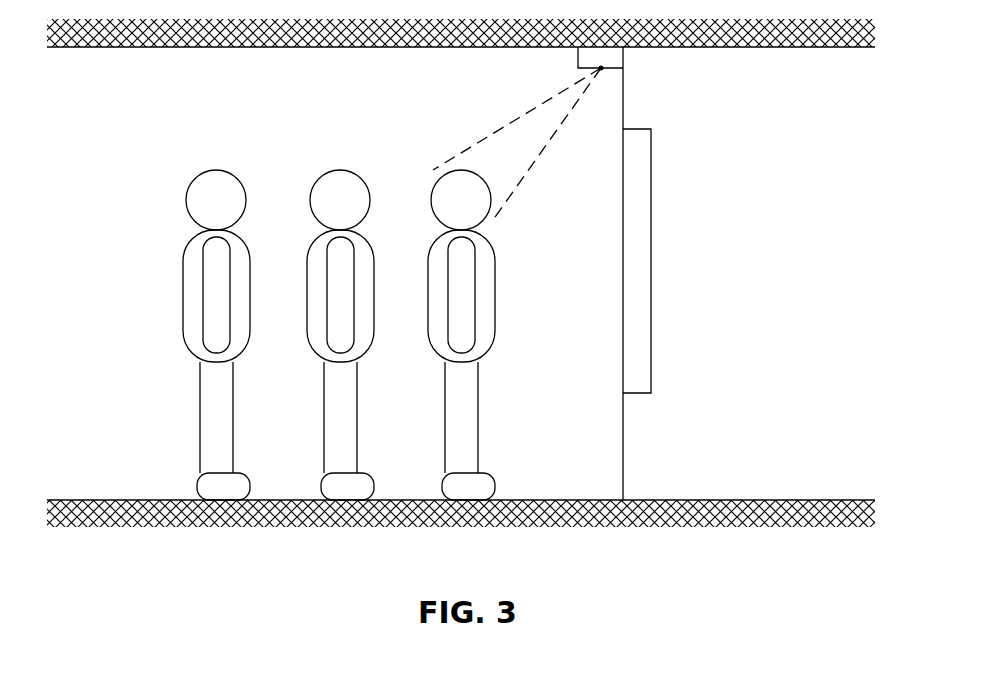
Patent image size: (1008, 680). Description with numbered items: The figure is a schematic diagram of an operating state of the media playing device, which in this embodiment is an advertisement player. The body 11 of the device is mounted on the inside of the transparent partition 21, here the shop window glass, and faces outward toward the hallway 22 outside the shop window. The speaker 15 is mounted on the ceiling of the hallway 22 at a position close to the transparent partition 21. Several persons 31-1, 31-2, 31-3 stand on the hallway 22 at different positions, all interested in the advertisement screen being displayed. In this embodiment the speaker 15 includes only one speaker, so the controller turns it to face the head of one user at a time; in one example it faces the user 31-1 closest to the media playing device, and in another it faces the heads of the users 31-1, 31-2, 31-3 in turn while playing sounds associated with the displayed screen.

The body 11 is at (651, 218).
The speaker 15 is at (623, 57).
The transparent partition 21 is at (623, 440).
The hallway 22 is at (124, 141).
The user 31-1 is at (478, 448).
The user 31-2 is at (357, 448).
The user 31-3 is at (233, 448).